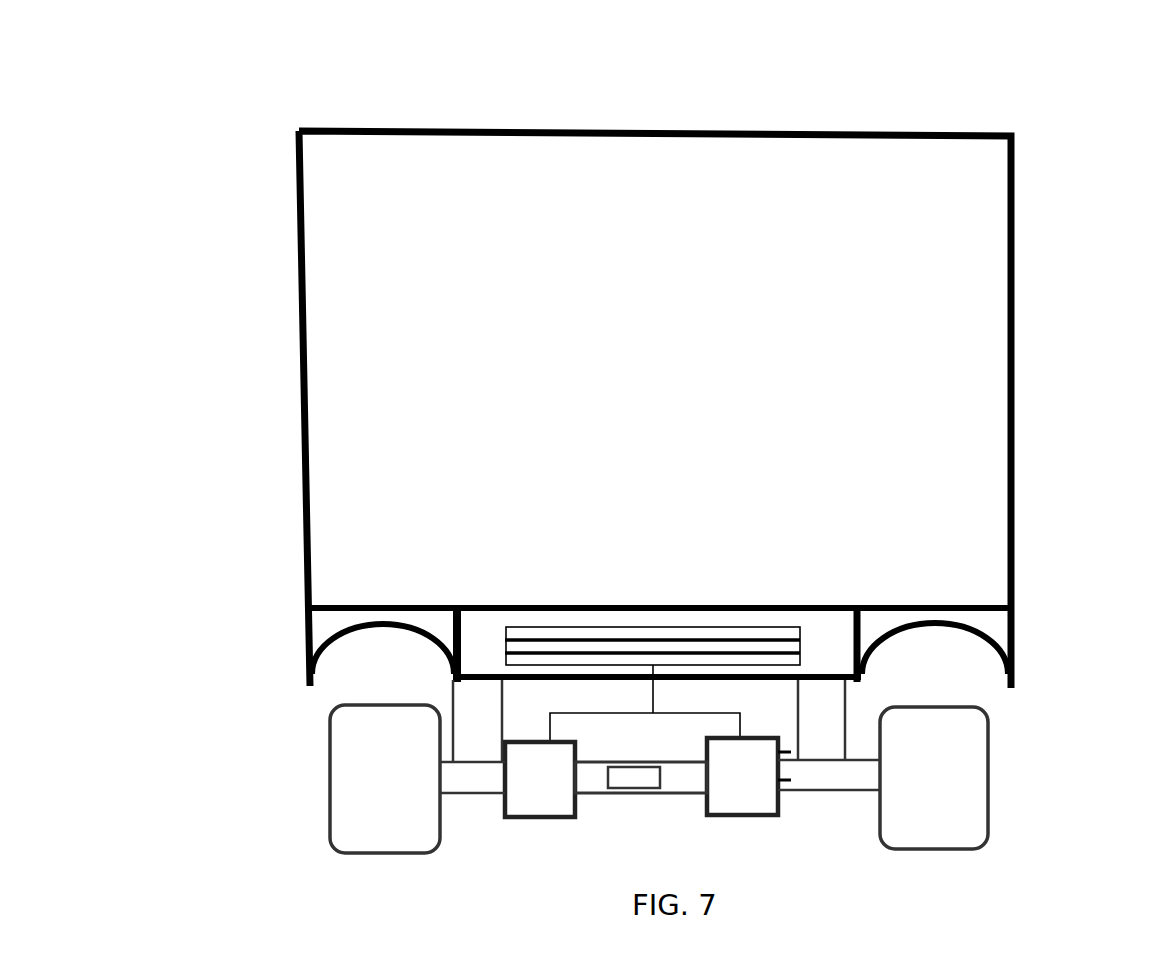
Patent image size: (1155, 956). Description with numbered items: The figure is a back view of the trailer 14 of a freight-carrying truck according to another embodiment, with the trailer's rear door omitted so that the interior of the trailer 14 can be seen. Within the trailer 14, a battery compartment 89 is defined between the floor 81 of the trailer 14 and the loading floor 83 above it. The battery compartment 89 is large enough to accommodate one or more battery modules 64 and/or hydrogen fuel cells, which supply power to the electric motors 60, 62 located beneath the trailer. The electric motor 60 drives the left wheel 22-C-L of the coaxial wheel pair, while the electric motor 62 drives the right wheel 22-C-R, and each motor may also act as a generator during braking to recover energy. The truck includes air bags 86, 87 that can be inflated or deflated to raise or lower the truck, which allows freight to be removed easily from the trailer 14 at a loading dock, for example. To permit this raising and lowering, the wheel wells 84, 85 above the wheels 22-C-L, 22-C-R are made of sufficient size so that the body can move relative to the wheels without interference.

The trailer 14 is at (388, 62).
The wheel 22-C-L is at (378, 803).
The wheel 22-C-R is at (944, 803).
The electric motor 60 is at (554, 789).
The electric motor 62 is at (756, 787).
The battery module 64 is at (783, 622).
The floor 81 is at (607, 678).
The loading floor 83 is at (656, 608).
The wheel well 84 is at (383, 643).
The wheel well 85 is at (946, 645).
The air bag 86 is at (492, 740).
The air bag 87 is at (835, 740).
The battery compartment 89 is at (841, 657).